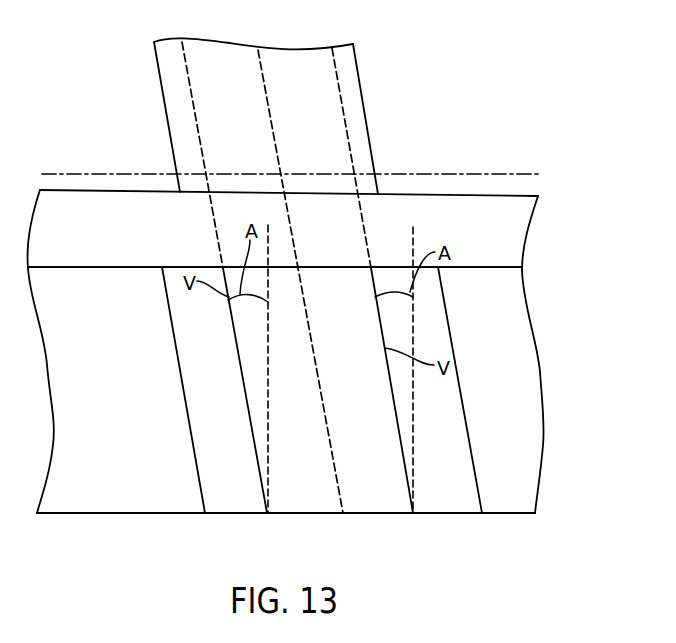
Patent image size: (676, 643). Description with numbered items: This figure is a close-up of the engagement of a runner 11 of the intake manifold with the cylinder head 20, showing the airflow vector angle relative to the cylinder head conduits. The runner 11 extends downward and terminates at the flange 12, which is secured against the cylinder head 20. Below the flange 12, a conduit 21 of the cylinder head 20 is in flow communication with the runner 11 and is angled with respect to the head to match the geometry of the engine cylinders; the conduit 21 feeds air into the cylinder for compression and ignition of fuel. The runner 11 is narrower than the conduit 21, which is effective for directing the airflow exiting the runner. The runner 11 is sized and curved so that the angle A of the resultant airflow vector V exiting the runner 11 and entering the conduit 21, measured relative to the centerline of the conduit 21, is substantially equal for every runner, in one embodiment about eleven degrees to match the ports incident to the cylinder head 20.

The runner 11 is at (348, 95).
The flange 12 is at (503, 250).
The cylinder head 20 is at (535, 460).
The conduit 21 is at (419, 515).